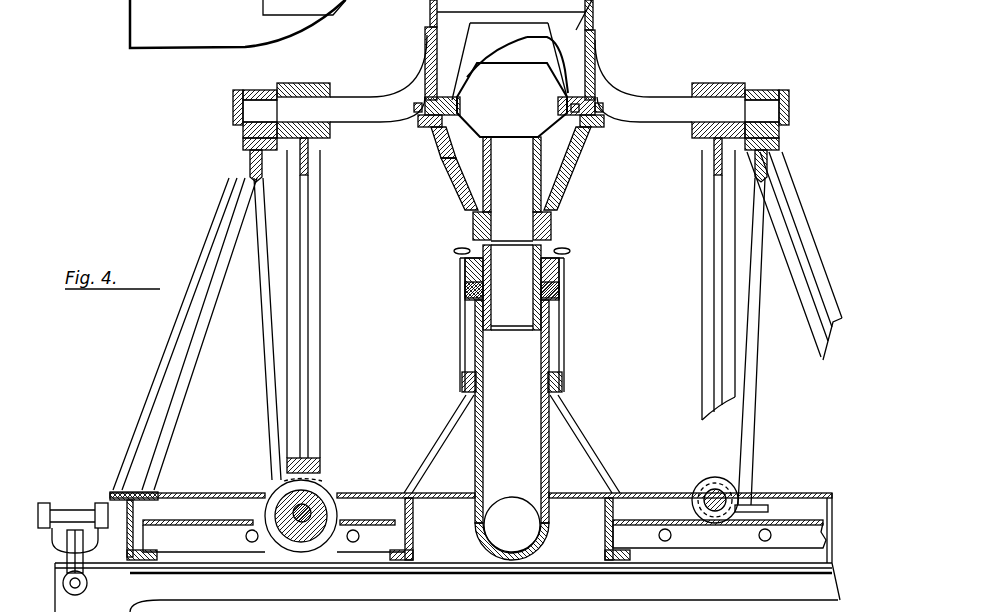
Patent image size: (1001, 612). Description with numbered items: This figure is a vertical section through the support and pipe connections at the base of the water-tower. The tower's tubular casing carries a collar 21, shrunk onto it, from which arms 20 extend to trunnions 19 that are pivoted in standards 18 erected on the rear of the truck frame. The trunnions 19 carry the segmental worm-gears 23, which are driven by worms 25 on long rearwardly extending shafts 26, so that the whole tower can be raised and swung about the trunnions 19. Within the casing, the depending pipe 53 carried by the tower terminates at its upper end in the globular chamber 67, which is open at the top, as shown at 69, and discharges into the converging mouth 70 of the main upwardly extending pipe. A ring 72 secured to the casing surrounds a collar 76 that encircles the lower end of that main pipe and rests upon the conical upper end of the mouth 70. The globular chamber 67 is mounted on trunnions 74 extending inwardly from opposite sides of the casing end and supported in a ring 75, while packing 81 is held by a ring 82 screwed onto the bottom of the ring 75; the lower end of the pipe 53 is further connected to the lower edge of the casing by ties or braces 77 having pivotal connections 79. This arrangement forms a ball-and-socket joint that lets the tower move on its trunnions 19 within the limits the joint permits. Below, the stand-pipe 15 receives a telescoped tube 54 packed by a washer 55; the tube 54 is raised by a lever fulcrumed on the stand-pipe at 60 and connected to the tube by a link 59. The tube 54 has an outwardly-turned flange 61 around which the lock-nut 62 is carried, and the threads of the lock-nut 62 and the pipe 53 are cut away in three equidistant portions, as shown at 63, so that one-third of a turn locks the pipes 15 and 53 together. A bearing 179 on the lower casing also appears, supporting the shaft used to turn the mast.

The stand-pipe 15 is at (512, 430).
The standards 18 is at (163, 356).
The trunnions 19 is at (272, 92).
The arms 20 is at (656, 94).
The collar 21 is at (425, 47).
The segmental worm-gears 23 is at (322, 458).
The worms 25 is at (340, 494).
The shafts 26 is at (282, 500).
The depending pipe 53 is at (535, 197).
The tube 54 is at (512, 287).
The washer 55 is at (562, 284).
The link 59 is at (461, 325).
The fulcrum 60 is at (462, 384).
The outwardly-turned flange 61 is at (548, 243).
The lock-nut 62 is at (568, 252).
The cut-away thread portions 63 is at (553, 231).
The globular chamber 67 is at (512, 100).
The open top 69 is at (489, 61).
The converging mouth 70 is at (546, 60).
The ring 72 is at (570, 15).
The trunnions 74 is at (462, 110).
The ring 75 is at (432, 142).
The collar 76 is at (546, 19).
The ties or braces 77 is at (445, 172).
The pivotal connections 79 is at (603, 110).
The packing 81 is at (575, 112).
The ring 82 is at (418, 122).
The bearing 179 is at (262, 6).